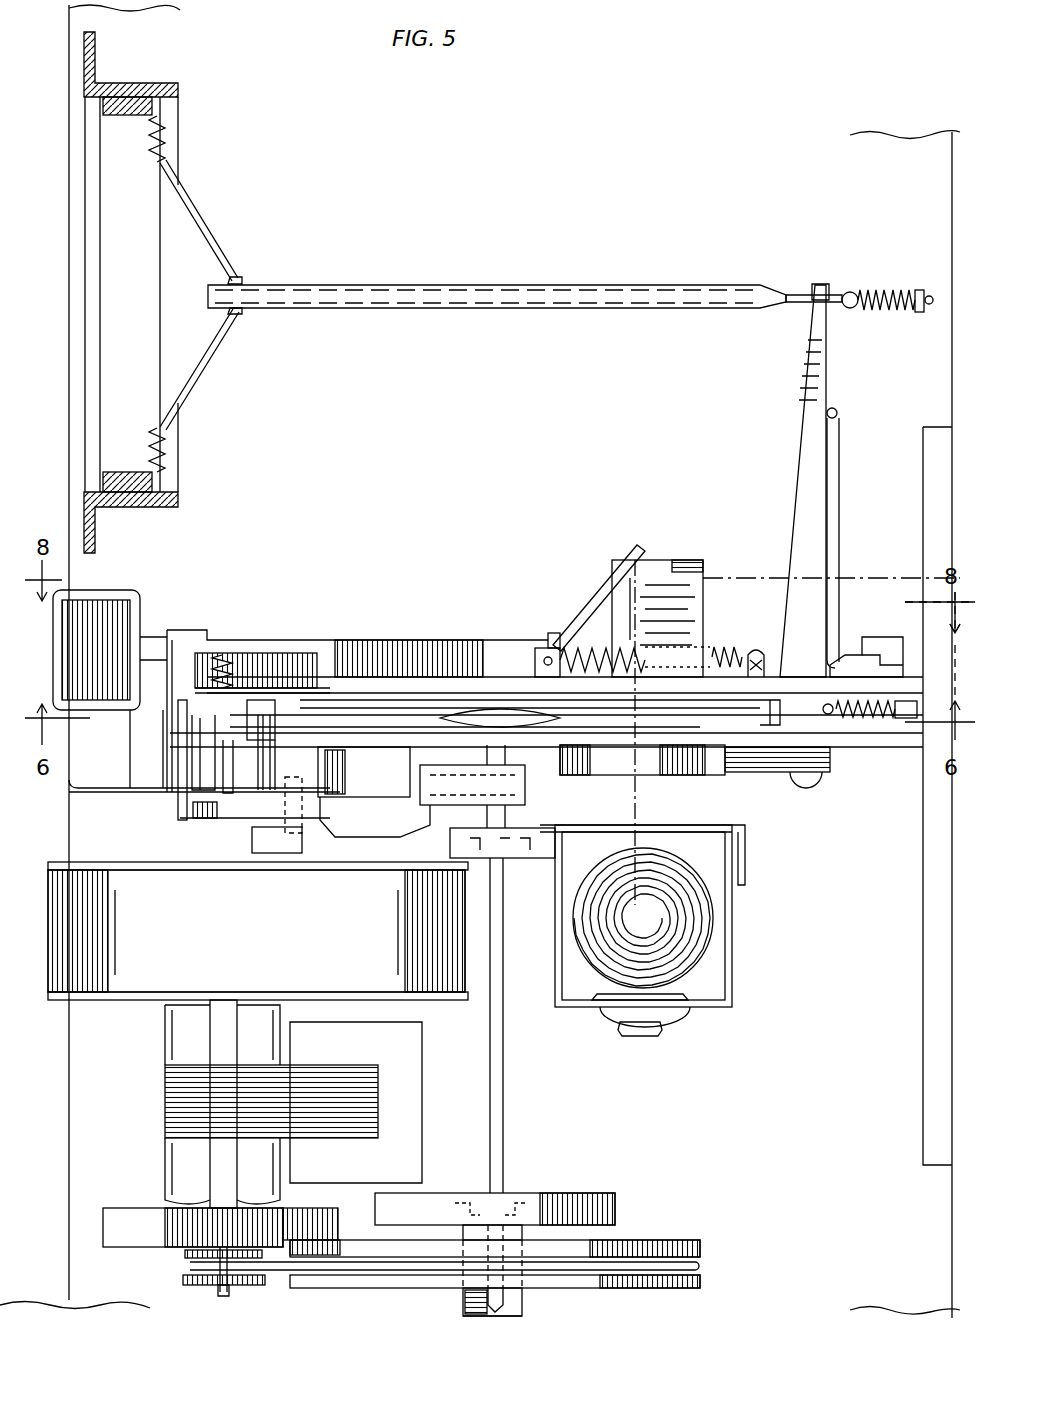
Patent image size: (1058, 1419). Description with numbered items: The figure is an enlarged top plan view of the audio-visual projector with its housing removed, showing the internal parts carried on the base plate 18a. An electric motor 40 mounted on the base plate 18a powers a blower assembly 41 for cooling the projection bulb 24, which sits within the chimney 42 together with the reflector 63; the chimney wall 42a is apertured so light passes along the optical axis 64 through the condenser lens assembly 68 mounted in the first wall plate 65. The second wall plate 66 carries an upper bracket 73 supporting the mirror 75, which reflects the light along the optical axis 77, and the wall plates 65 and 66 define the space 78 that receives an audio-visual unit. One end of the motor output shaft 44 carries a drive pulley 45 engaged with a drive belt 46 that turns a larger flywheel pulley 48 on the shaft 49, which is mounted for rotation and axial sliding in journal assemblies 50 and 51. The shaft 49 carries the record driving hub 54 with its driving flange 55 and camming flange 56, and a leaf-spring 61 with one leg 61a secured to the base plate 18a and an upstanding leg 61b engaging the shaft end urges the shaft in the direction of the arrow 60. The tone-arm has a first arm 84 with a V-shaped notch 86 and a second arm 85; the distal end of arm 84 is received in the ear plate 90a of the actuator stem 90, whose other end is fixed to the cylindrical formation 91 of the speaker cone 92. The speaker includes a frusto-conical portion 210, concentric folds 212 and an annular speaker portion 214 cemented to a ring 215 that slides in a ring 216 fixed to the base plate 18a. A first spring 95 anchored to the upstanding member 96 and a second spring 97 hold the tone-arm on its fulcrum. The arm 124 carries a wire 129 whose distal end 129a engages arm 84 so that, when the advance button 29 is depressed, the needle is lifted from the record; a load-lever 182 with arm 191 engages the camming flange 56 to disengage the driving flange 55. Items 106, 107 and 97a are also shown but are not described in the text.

The concentric folds 212 is at (172, 128).
The speaker cone 92 is at (211, 226).
The cylindrical formation 91 is at (240, 277).
The actuator stem 90 is at (572, 283).
The ear plate 90a is at (800, 293).
The first spring 95 is at (872, 290).
The upstanding member 96 is at (922, 290).
The annular speaker portion 214 is at (140, 340).
The frusto-conical portion 210 is at (200, 368).
The first arm 84 is at (806, 390).
The distal end of wire 129a is at (838, 412).
The wire 129 is at (840, 552).
The base plate 18a is at (435, 450).
The ring 215 is at (160, 483).
The ring 216 is at (168, 508).
The advance button 29 is at (140, 600).
The upper bracket 73 is at (686, 558).
The optical axis 77 is at (742, 578).
The mirror 75 is at (600, 600).
The space 78 is at (360, 690).
The second wall plate 66 is at (484, 660).
The spring 106 is at (722, 648).
The roller 107 is at (756, 652).
The arm 124 is at (865, 642).
The driving flange 55 is at (445, 722).
The record driving hub 54 is at (568, 794).
The camming flange 56 is at (530, 790).
The optical axis 64 is at (640, 790).
The condenser lens assembly 68 is at (700, 775).
The first wall plate 65 is at (860, 748).
The second arm 85 is at (805, 785).
The V-shaped notch 86 is at (823, 708).
The spring 97 is at (889, 720).
The anchor 97a is at (915, 720).
The load-lever 182 is at (170, 819).
The arm 191 is at (430, 830).
The journal assembly 50 is at (540, 860).
The wall 42a is at (735, 826).
The projection bulb 24 is at (705, 945).
The chimney 42 is at (735, 1001).
The reflector 63 is at (672, 1018).
The arrow 60 is at (523, 1050).
The blower assembly 41 is at (250, 933).
The shaft 49 is at (505, 1150).
The journal assembly 51 is at (625, 1212).
The flywheel pulley 48 is at (700, 1250).
The electric motor 40 is at (156, 1165).
The output shaft 44 is at (222, 1292).
The drive pulley 45 is at (250, 1283).
The drive belt 46 is at (285, 1272).
The leaf-spring 61 is at (463, 1302).
The leg 61a is at (510, 1296).
The upstanding leg 61b is at (505, 1317).